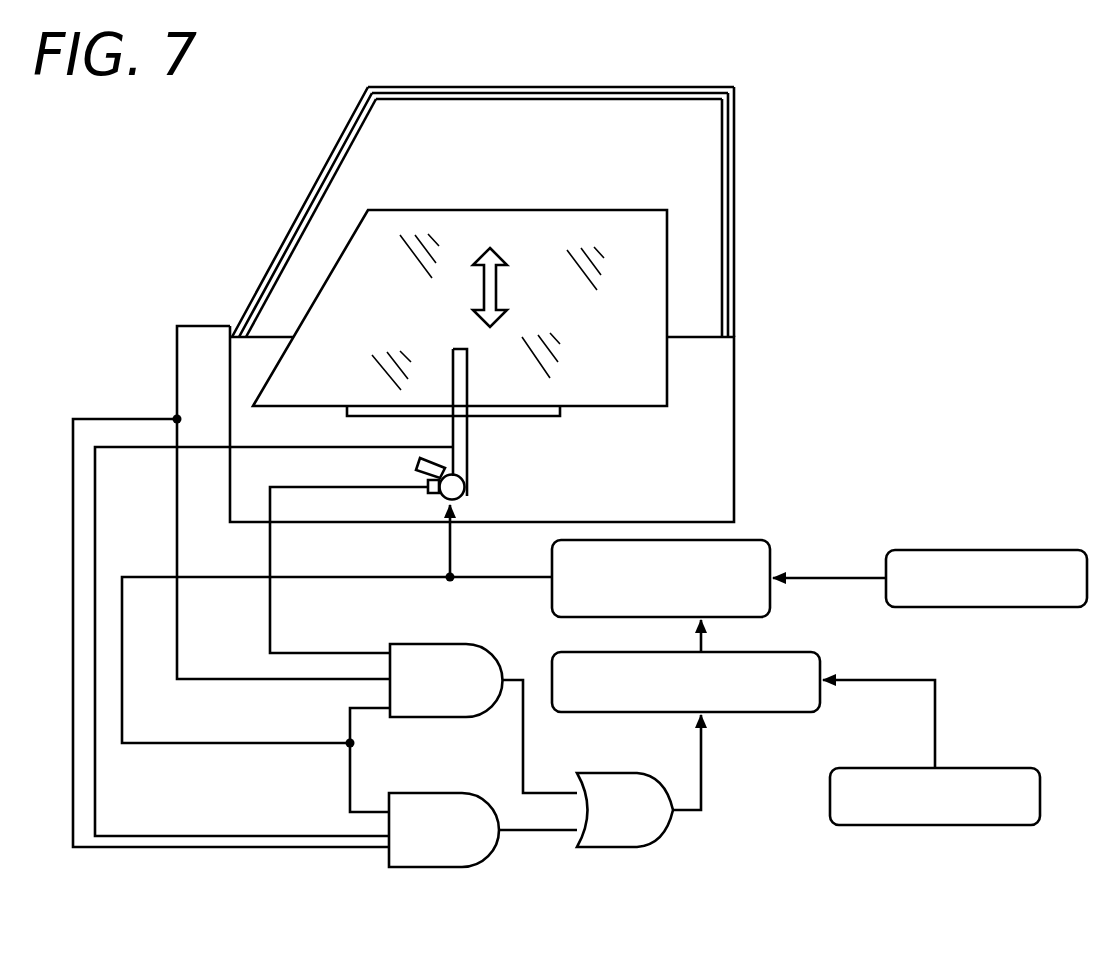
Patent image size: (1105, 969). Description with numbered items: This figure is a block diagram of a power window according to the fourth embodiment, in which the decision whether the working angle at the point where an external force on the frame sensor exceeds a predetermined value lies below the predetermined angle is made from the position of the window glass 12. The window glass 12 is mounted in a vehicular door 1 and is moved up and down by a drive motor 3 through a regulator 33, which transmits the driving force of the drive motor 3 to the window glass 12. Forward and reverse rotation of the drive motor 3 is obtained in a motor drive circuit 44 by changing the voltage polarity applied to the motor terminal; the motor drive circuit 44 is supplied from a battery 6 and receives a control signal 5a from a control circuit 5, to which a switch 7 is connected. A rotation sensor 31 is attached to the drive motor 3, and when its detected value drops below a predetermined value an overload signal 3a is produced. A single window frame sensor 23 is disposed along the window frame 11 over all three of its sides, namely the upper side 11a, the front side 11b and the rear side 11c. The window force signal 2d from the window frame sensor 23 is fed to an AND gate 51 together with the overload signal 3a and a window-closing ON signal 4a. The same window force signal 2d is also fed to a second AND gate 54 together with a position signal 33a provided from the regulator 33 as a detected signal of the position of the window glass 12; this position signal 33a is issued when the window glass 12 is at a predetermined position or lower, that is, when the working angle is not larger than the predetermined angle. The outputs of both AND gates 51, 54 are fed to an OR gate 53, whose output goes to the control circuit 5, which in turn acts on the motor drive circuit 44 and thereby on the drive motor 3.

The vehicular door 1 is at (729, 460).
The window force signal 2d is at (176, 545).
The drive motor 3 is at (463, 492).
The overload signal 3a is at (270, 543).
The window-closing ON signal 4a is at (262, 744).
The control circuit 5 is at (784, 713).
The control signal 5a is at (704, 636).
The battery 6 is at (1044, 550).
The switch 7 is at (996, 768).
The window frame 11 is at (521, 203).
The upper side 11a is at (524, 101).
The front side 11b is at (327, 160).
The rear side 11c is at (737, 145).
The window glass 12 is at (658, 287).
The window frame sensor 23 is at (293, 233).
The rotation sensor 31 is at (428, 490).
The regulator 33 is at (468, 455).
The position signal 33a is at (138, 835).
The motor drive circuit 44 is at (772, 564).
The AND gate 51 is at (455, 644).
The OR gate 53 is at (617, 773).
The AND gate 54 is at (450, 793).